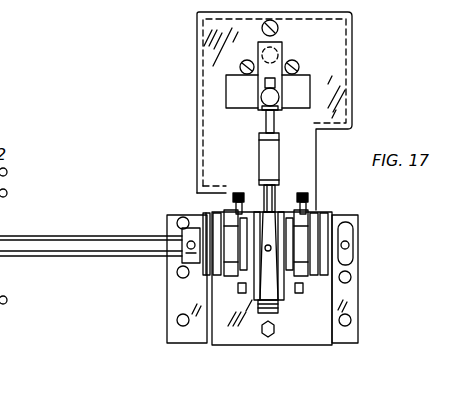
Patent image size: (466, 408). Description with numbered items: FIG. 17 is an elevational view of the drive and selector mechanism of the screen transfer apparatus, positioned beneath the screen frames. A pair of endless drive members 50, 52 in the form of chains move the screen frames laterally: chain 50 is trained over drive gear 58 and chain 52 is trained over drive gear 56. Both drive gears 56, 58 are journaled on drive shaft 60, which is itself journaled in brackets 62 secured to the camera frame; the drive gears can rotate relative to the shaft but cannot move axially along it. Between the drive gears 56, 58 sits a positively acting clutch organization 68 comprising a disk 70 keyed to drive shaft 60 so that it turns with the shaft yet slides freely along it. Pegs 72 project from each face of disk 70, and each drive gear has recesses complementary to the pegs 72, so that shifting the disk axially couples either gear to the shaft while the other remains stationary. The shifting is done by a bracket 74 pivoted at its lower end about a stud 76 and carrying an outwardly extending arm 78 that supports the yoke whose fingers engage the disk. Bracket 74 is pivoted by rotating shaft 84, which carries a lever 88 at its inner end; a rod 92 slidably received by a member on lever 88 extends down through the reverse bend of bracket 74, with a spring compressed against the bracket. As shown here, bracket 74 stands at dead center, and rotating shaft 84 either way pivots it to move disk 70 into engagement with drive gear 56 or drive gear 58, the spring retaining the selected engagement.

The endless drive member 50 is at (303, 193).
The endless drive member 52 is at (237, 193).
The drive gear 56 is at (243, 212).
The drive gear 58 is at (268, 232).
The drive shaft 60 is at (42, 258).
The bracket 62 is at (205, 328).
The clutch organization 68 is at (250, 342).
The disk 70 is at (278, 288).
The peg 72 is at (245, 212).
The bracket 74 is at (279, 152).
The stud 76 is at (269, 338).
The arm 78 is at (284, 306).
The shaft 84 is at (273, 52).
The lever 88 is at (284, 61).
The rod 92 is at (266, 124).